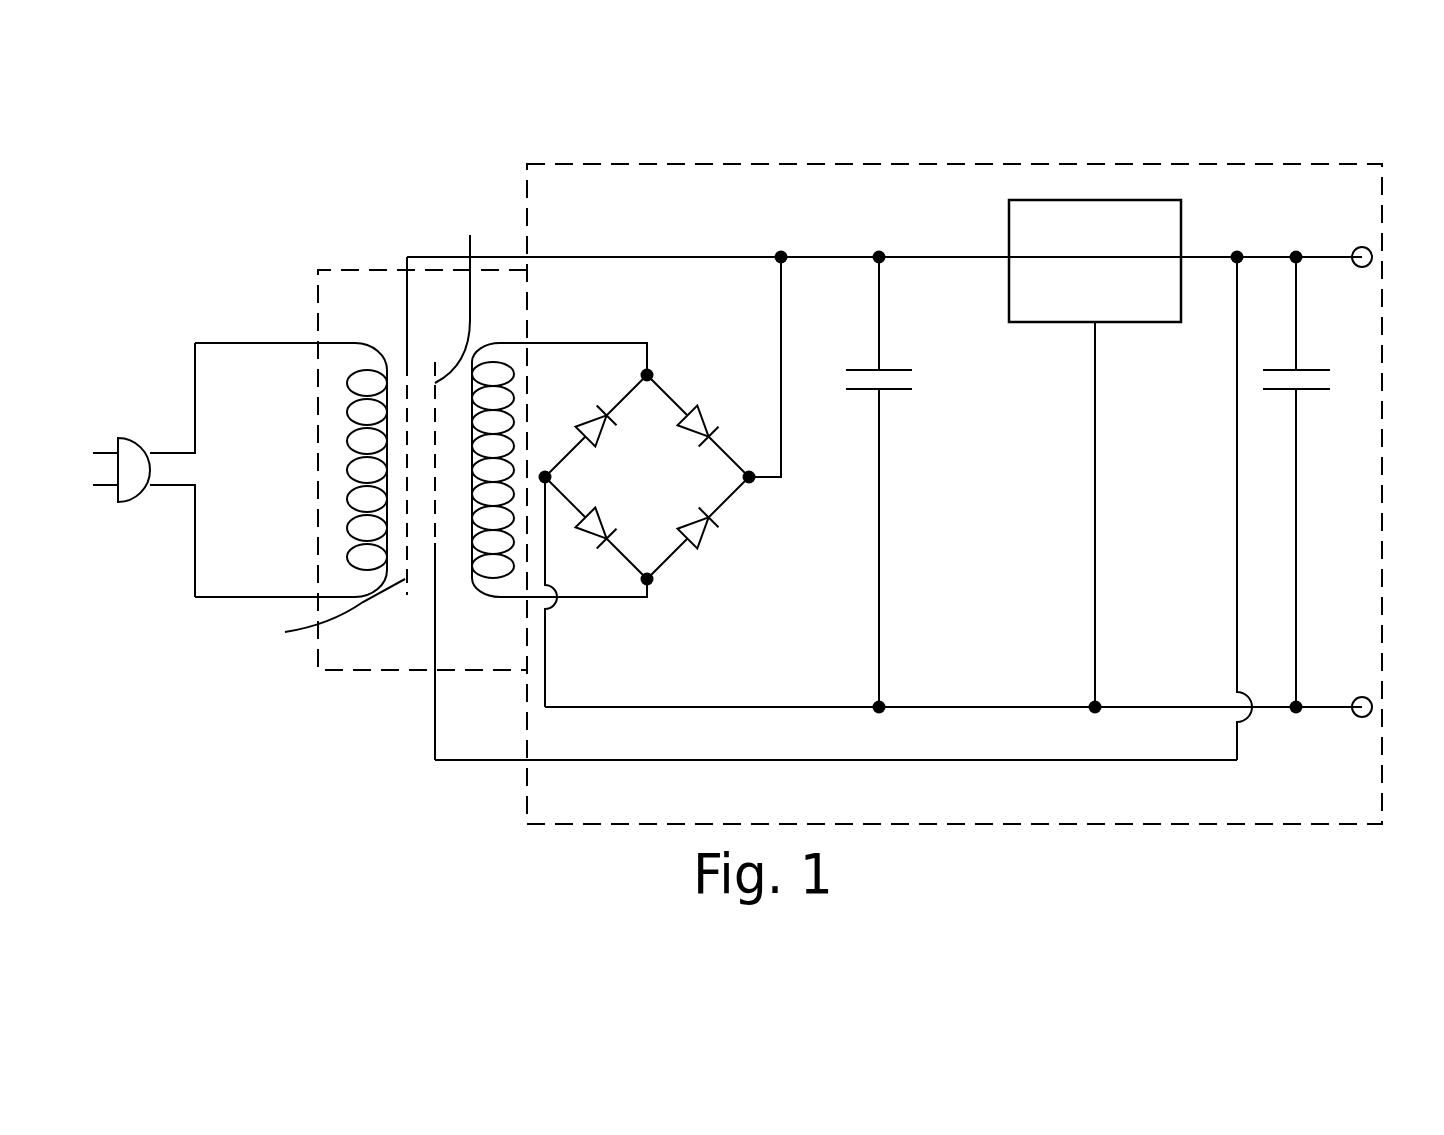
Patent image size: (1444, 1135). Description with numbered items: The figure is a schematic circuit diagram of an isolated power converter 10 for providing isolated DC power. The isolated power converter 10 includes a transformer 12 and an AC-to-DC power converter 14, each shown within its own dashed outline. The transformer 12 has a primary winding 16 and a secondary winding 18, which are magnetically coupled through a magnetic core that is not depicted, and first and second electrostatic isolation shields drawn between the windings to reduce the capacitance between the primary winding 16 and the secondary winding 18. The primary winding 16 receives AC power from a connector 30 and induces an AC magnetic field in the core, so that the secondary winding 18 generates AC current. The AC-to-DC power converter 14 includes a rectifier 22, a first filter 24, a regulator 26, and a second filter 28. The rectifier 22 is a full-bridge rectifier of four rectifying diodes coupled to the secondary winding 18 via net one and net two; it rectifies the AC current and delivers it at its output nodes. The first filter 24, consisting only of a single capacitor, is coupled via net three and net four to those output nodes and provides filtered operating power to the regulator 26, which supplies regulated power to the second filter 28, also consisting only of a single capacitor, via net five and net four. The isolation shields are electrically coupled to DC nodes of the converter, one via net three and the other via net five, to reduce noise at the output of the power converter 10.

The isolated power converter 10 is at (392, 166).
The transformer 12 is at (328, 270).
The AC-to-DC power converter 14 is at (665, 164).
The primary winding 16 is at (350, 467).
The secondary winding 18 is at (487, 593).
The rectifier 22 is at (699, 349).
The first filter 24 is at (851, 341).
The regulator 26 is at (1095, 453).
The second filter 28 is at (1321, 345).
The connector 30 is at (123, 502).